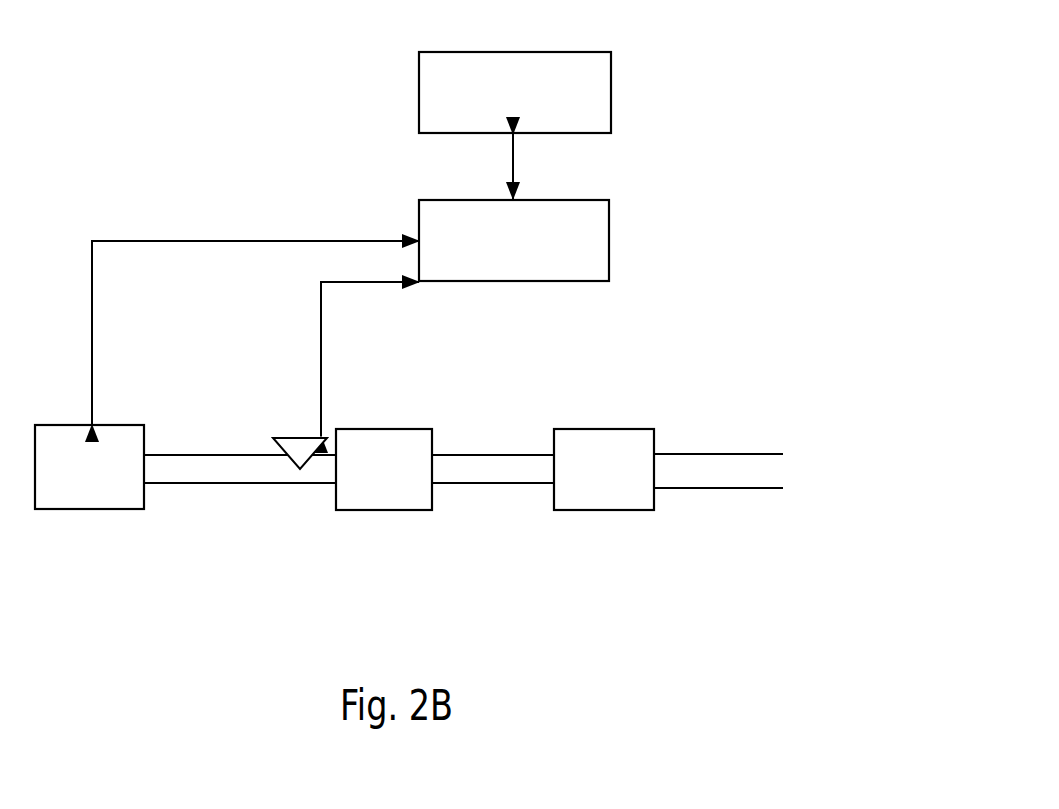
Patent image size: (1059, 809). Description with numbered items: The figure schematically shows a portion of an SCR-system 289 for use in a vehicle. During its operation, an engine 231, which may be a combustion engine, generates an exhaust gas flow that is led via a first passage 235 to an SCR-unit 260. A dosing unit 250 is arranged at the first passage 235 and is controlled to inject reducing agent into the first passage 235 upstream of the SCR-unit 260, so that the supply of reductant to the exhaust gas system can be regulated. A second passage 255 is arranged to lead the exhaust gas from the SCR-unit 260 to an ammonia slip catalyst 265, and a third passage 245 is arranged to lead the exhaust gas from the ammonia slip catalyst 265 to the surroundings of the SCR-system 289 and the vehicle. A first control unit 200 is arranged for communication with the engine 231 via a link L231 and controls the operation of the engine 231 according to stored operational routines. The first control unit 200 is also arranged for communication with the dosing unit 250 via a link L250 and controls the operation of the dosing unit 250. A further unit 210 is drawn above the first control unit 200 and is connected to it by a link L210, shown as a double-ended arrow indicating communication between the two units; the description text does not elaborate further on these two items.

The SCR-system 289 is at (318, 175).
The controller 210 is at (496, 105).
The first control unit 200 is at (495, 253).
The communication link L210 is at (515, 168).
The link L231 is at (91, 312).
The link L250 is at (322, 314).
The engine 231 is at (70, 479).
The first passage 235 is at (223, 485).
The dosing unit 250 is at (300, 436).
The SCR-unit 260 is at (365, 479).
The third passage 245 is at (511, 487).
The ammonia slip catalyst 265 is at (585, 481).
The second passage 255 is at (674, 489).